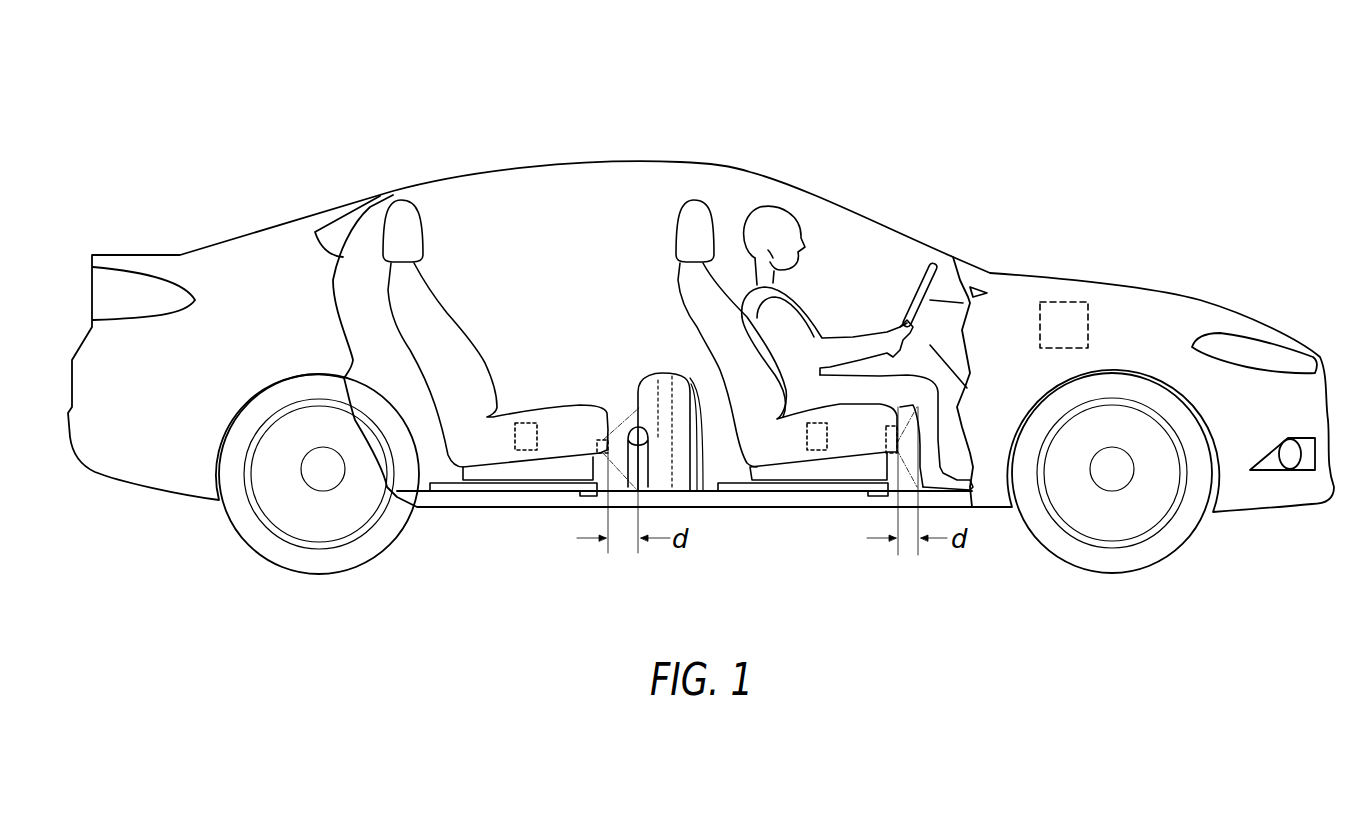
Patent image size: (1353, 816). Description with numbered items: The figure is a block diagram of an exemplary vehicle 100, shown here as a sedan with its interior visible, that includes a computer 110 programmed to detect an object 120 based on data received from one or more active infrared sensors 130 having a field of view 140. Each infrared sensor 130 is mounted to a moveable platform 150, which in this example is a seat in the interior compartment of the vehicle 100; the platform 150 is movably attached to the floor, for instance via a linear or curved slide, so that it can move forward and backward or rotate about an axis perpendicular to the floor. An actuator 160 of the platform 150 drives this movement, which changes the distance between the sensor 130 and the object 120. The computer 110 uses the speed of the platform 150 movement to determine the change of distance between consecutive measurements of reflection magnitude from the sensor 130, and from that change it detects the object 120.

The vehicle 100 is at (1203, 300).
The computer 110 is at (1074, 302).
The object 120 is at (655, 375).
The infrared sensor 130 is at (600, 440).
The field of view 140 is at (600, 462).
The platform 150 is at (403, 198).
The actuator 160 is at (526, 452).